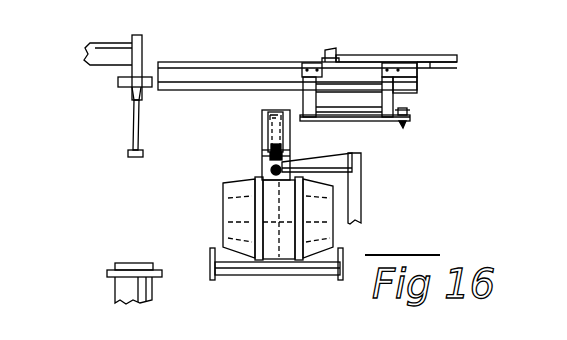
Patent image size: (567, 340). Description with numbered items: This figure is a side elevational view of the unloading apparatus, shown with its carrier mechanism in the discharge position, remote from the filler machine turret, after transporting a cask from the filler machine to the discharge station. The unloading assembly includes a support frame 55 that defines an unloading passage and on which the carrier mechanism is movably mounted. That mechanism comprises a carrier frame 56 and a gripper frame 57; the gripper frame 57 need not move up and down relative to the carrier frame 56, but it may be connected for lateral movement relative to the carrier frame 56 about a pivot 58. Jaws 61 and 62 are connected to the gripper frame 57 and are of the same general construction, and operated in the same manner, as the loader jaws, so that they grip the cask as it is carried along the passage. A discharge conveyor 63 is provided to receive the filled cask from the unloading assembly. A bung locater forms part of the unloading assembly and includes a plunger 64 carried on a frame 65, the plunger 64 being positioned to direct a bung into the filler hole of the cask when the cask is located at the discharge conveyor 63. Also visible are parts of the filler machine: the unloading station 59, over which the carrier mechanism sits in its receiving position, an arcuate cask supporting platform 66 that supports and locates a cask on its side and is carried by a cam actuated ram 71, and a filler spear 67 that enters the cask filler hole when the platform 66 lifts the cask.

The support frame 55 is at (220, 65).
The carrier frame 56 is at (395, 100).
The gripper frame 57 is at (260, 132).
The pivot 58 is at (404, 126).
The unloading station 59 is at (98, 290).
The jaw 61 is at (268, 157).
The jaw 62 is at (278, 232).
The discharge conveyor 63 is at (238, 283).
The plunger 64 is at (292, 160).
The frame 65 is at (365, 188).
The cask supporting platform 66 is at (130, 265).
The filler spear 67 is at (133, 127).
The cam actuated ram 71 is at (118, 280).